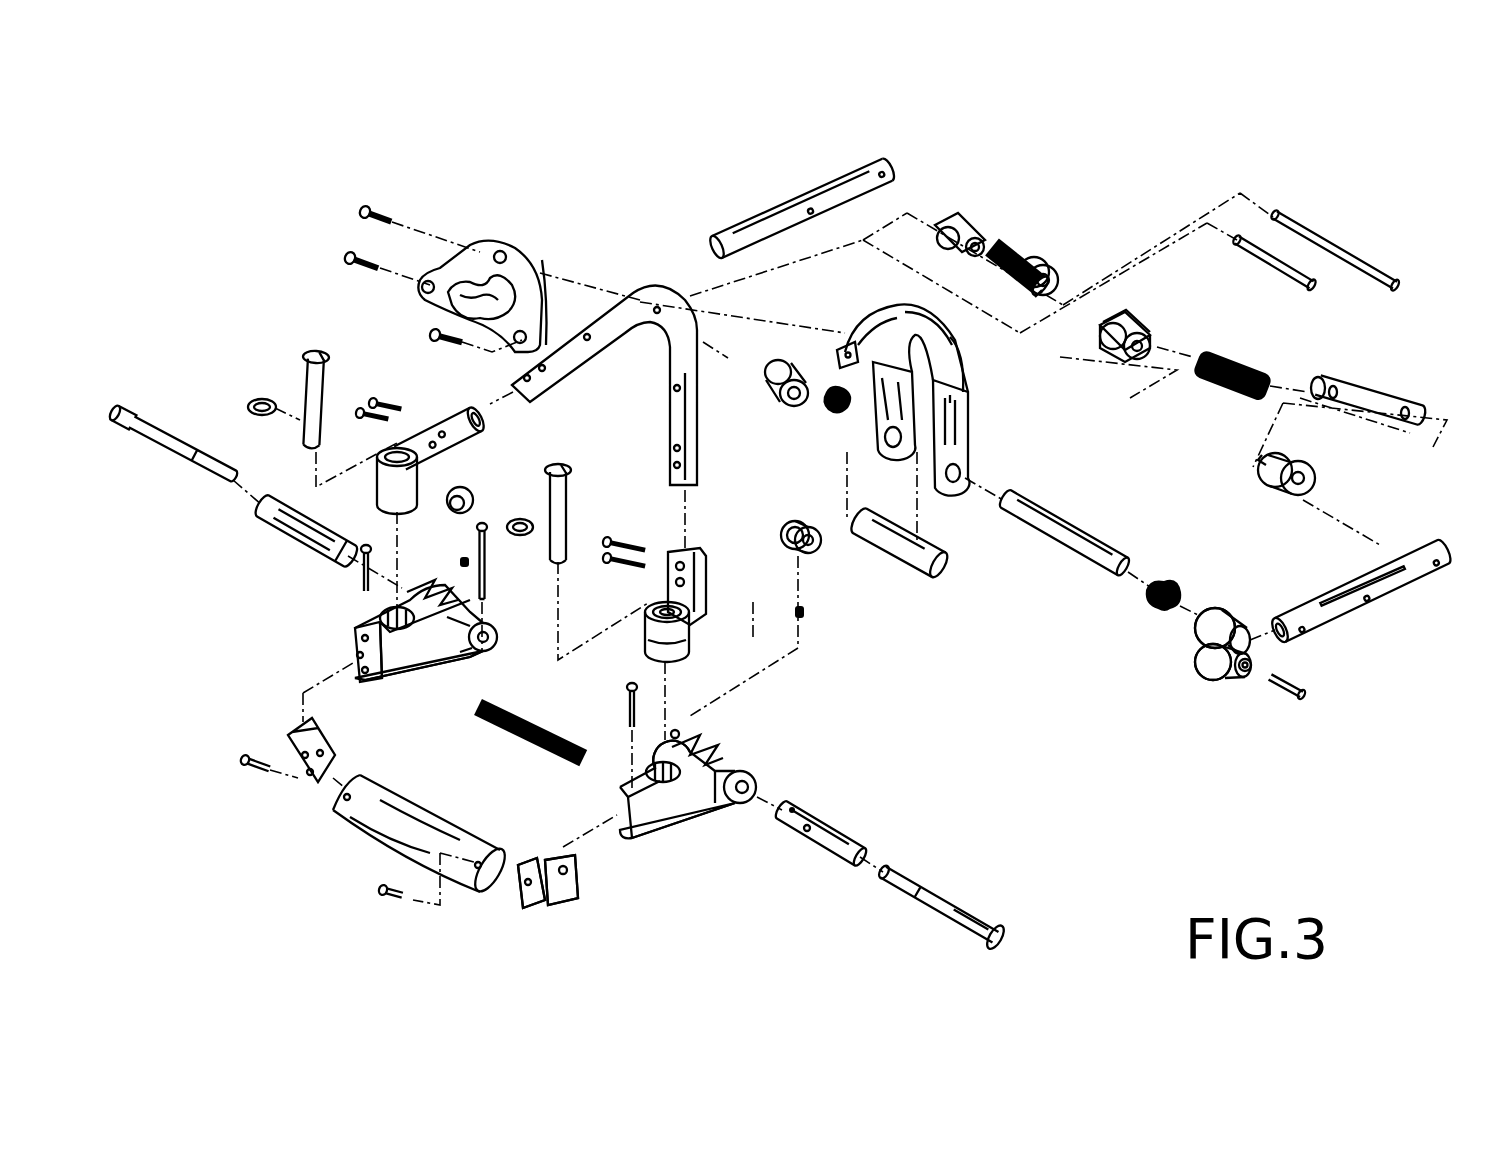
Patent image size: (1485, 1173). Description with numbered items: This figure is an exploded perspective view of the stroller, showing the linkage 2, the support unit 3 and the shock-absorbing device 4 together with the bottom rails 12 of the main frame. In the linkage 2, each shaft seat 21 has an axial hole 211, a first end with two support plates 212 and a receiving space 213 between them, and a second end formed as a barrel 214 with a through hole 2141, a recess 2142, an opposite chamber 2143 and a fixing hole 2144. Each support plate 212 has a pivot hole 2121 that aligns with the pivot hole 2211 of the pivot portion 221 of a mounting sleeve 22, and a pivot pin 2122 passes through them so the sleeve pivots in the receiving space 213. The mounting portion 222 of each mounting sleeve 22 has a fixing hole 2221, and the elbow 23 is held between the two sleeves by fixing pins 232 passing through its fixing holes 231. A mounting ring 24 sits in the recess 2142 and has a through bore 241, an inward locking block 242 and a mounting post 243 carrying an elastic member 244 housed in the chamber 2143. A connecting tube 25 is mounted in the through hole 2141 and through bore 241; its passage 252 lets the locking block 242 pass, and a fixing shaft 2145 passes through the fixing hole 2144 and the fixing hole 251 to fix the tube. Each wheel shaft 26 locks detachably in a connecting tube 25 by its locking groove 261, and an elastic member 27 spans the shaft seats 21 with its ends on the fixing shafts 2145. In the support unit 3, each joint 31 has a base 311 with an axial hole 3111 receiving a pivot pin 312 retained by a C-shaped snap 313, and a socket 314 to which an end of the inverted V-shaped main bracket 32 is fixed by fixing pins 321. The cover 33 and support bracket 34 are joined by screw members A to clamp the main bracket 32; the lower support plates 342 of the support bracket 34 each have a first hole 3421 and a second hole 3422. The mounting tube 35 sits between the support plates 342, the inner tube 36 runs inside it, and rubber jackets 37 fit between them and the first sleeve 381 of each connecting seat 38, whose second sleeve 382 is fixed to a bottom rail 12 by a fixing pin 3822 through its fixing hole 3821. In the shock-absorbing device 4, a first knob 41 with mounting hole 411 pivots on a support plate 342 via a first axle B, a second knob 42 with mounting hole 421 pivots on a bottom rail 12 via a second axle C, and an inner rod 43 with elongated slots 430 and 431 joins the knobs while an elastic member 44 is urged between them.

The linkage 2 is at (156, 537).
The support unit 3 is at (768, 92).
The shock-absorbing device 4 is at (1300, 107).
The bottom rail 12 is at (1412, 578).
The shaft seat 21 is at (694, 836).
The axial hole 211 is at (700, 820).
The support plate 212 is at (378, 682).
The receiving space 213 is at (355, 656).
The barrel 214 is at (732, 770).
The pivot hole 2121 is at (368, 640).
The pivot pin 2122 is at (362, 582).
The through hole 2141 is at (752, 787).
The recess 2142 is at (690, 736).
The chamber 2143 is at (467, 662).
The fixing hole 2144 is at (502, 662).
The fixing shaft 2145 is at (488, 582).
The mounting sleeve 22 is at (556, 924).
The pivot portion 221 is at (562, 902).
The pivot hole 2211 is at (568, 870).
The mounting portion 222 is at (527, 908).
The fixing hole 2221 is at (527, 876).
The elbow 23 is at (366, 826).
The fixing hole 231 is at (472, 897).
The fixing pin 232 is at (256, 778).
The mounting ring 24 is at (787, 526).
The through bore 241 is at (830, 524).
The locking block 242 is at (810, 548).
The mounting post 243 is at (462, 512).
The elastic member 244 is at (462, 562).
The connecting tube 25 is at (860, 838).
The fixing hole 251 is at (795, 812).
The passage 252 is at (808, 834).
The wheel shaft 26 is at (975, 903).
The locking groove 261 is at (892, 870).
The elastic member 27 is at (530, 744).
The joint 31 is at (665, 530).
The base 311 is at (668, 651).
The axial hole 3111 is at (652, 613).
The pivot pin 312 is at (306, 370).
The C-shaped snap 313 is at (248, 408).
The socket 314 is at (702, 556).
The main bracket 32 is at (612, 330).
The fixing pin 321 is at (620, 538).
The cover 33 is at (524, 258).
The support bracket 34 is at (985, 398).
The support plate 342 is at (968, 455).
The first hole 3421 is at (958, 430).
The second hole 3422 is at (968, 476).
The mounting tube 35 is at (905, 555).
The inner tube 36 is at (1068, 548).
The rubber jacket 37 is at (1165, 582).
The connecting seat 38 is at (1208, 698).
The first sleeve 381 is at (1226, 622).
The second sleeve 382 is at (1212, 662).
The fixing hole 3821 is at (1244, 672).
The fixing pin 3822 is at (1295, 690).
The first knob 41 is at (950, 228).
The mounting hole 411 is at (1142, 328).
The second knob 42 is at (1046, 262).
The mounting hole 421 is at (1266, 462).
The inner rod 43 is at (1366, 396).
The elongated slot 430 is at (1338, 384).
The elongated slot 431 is at (1415, 412).
The elastic member 44 is at (1000, 244).
The screw member A is at (380, 214).
The first axle B is at (1275, 270).
The second axle C is at (1340, 252).